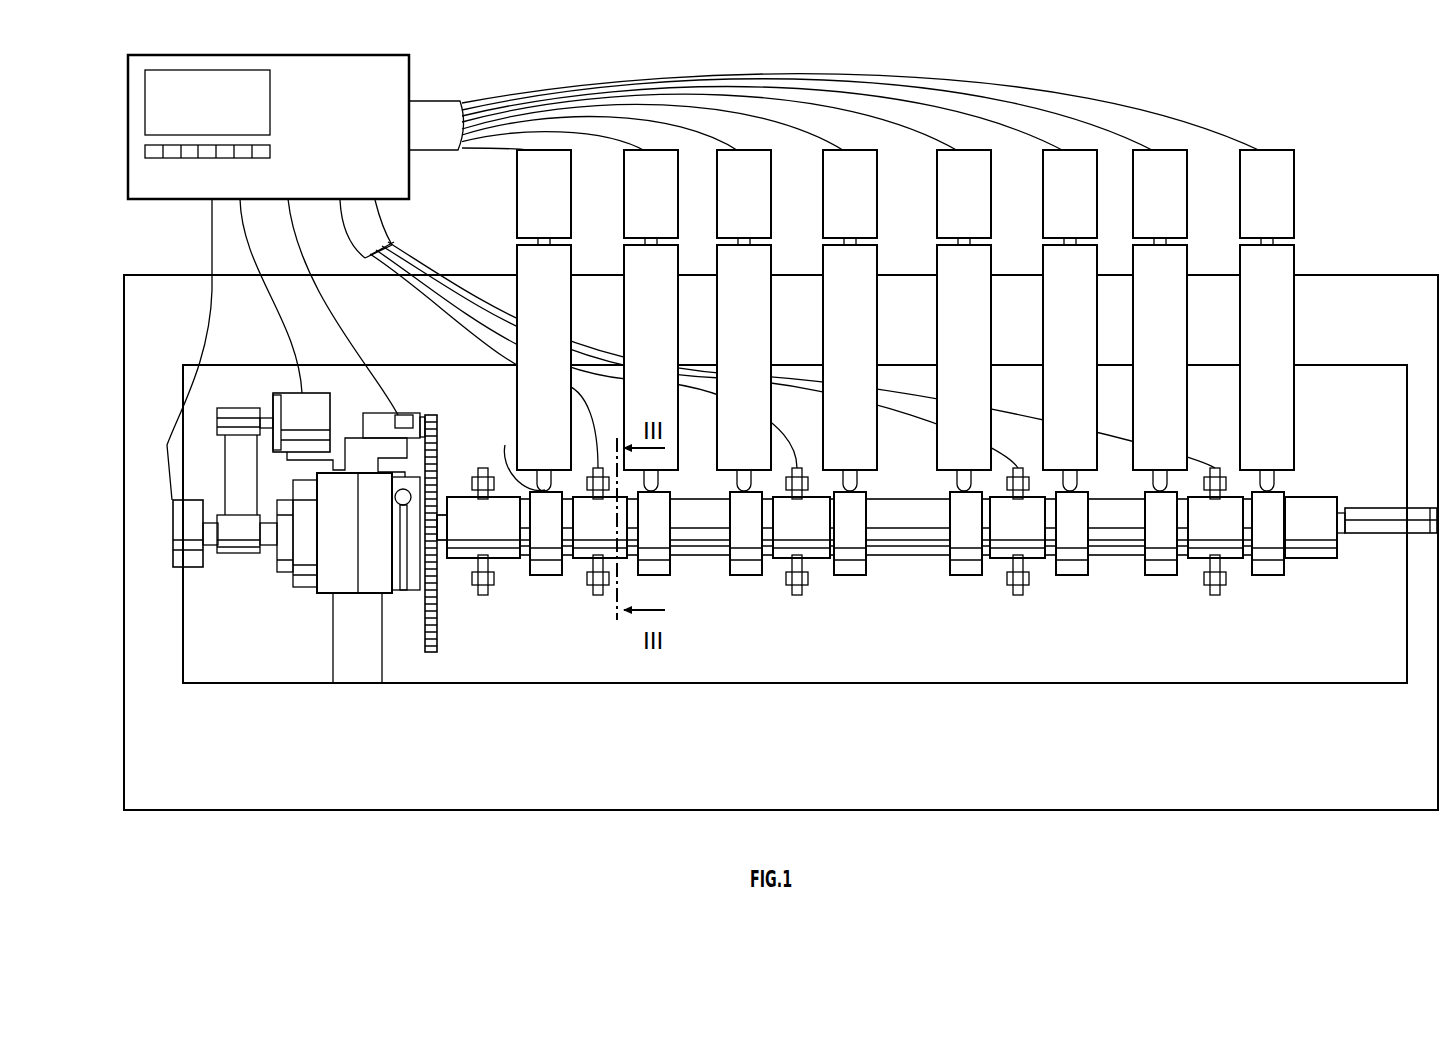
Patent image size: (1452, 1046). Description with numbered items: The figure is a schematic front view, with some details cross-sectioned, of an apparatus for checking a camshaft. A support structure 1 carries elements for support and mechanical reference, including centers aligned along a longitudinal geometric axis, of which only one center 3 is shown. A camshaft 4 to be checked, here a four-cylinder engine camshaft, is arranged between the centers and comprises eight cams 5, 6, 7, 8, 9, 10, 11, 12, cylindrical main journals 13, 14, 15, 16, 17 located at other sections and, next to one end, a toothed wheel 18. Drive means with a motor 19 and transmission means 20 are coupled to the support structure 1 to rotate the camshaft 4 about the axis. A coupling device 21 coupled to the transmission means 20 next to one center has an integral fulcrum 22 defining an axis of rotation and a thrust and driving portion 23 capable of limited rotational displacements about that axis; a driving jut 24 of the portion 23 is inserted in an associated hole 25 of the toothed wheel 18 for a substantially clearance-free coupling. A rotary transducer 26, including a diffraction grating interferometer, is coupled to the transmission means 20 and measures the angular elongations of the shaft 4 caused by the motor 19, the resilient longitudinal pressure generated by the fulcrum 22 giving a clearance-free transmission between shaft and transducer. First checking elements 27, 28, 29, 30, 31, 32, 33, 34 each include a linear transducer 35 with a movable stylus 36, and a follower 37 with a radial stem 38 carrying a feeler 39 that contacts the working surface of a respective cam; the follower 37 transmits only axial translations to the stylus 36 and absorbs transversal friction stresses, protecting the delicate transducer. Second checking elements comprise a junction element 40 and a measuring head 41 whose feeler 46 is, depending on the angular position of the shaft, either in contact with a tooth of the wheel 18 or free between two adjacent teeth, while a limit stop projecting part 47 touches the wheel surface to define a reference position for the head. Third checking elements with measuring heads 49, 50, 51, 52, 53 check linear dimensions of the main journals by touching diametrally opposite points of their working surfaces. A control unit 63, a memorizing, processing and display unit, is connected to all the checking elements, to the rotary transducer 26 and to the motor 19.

The support structure 1 is at (1388, 245).
The center 3 is at (1370, 530).
The camshaft 4 is at (906, 568).
The cam 5 is at (546, 574).
The cam 6 is at (665, 528).
The cam 7 is at (745, 578).
The cam 8 is at (853, 575).
The cam 9 is at (962, 578).
The cam 10 is at (1072, 578).
The cam 11 is at (1157, 580).
The cam 12 is at (1272, 575).
The main journal 13 is at (528, 560).
The main journal 14 is at (650, 575).
The main journal 15 is at (815, 560).
The main journal 16 is at (1036, 560).
The main journal 17 is at (1232, 548).
The toothed wheel 18 is at (437, 647).
The motor 19 is at (300, 393).
The transmission means 20 is at (305, 600).
The coupling device 21 is at (414, 467).
The integral fulcrum 22 is at (365, 595).
The thrust and driving portion 23 is at (420, 590).
The driving jut 24 is at (427, 585).
The hole 25 is at (435, 585).
The rotary transducer 26 is at (203, 568).
The first checking element 27 is at (534, 320).
The first checking element 28 is at (699, 215).
The first checking element 29 is at (799, 215).
The first checking element 30 is at (904, 215).
The first checking element 31 is at (1017, 215).
The first checking element 32 is at (1114, 215).
The first checking element 33 is at (1214, 215).
The first checking element 34 is at (1324, 215).
The linear transducer 35 is at (532, 194).
The movable stylus 36 is at (520, 242).
The follower 37 is at (530, 270).
The stem 38 is at (530, 484).
The feeler 39 is at (545, 490).
The junction element 40 is at (350, 438).
The measuring head 41 is at (383, 440).
The feeler 46 is at (405, 415).
The limit stop projecting part 47 is at (437, 417).
The measuring head 49 is at (472, 595).
The measuring head 50 is at (582, 596).
The measuring head 51 is at (776, 592).
The measuring head 52 is at (998, 596).
The measuring head 53 is at (1192, 592).
The control unit 63 is at (373, 62).